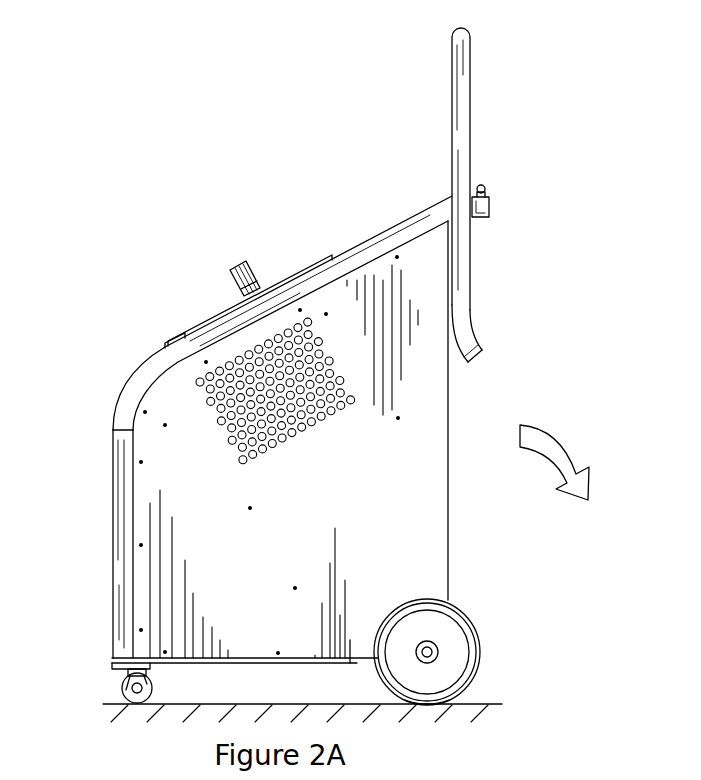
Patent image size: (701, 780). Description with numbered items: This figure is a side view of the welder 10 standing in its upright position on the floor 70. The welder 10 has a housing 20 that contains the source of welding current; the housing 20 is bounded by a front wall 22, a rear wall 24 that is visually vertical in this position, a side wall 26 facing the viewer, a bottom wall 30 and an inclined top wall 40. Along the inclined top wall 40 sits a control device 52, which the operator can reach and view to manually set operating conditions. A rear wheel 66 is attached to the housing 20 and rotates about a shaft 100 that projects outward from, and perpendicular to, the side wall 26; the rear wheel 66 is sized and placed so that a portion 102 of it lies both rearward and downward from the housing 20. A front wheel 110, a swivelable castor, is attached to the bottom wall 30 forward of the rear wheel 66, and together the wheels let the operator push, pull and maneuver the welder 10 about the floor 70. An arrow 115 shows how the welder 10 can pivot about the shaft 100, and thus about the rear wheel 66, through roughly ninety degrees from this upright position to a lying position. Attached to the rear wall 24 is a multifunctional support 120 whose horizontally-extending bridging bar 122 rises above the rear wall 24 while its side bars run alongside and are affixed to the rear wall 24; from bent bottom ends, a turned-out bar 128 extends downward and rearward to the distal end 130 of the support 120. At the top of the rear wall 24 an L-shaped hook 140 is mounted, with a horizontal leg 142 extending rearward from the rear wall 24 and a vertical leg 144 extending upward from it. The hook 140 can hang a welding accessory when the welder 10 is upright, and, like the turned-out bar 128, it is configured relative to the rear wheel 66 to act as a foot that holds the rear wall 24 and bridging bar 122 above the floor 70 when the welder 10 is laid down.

The welder 10 is at (518, 81).
The housing 20 is at (352, 237).
The front wall 22 is at (112, 548).
The rear wall 24 is at (448, 502).
The side wall 26 is at (292, 497).
The bottom wall 30 is at (265, 661).
The inclined top wall 40 is at (312, 263).
The second control device 52 is at (212, 322).
The rear wheel 66 is at (473, 603).
The floor 70 is at (490, 703).
The shaft 100 is at (440, 651).
The portion of wheel 102 is at (466, 699).
The front wheel 110 is at (152, 688).
The arrow 115 is at (562, 440).
The multifunctional support 120 is at (476, 31).
The bridging bar 122 is at (452, 112).
The turned-out bar 128 is at (481, 335).
The distal end 130 is at (480, 356).
The L-shaped hook 140 is at (489, 183).
The horizontal leg 142 is at (478, 219).
The vertical leg 144 is at (490, 201).